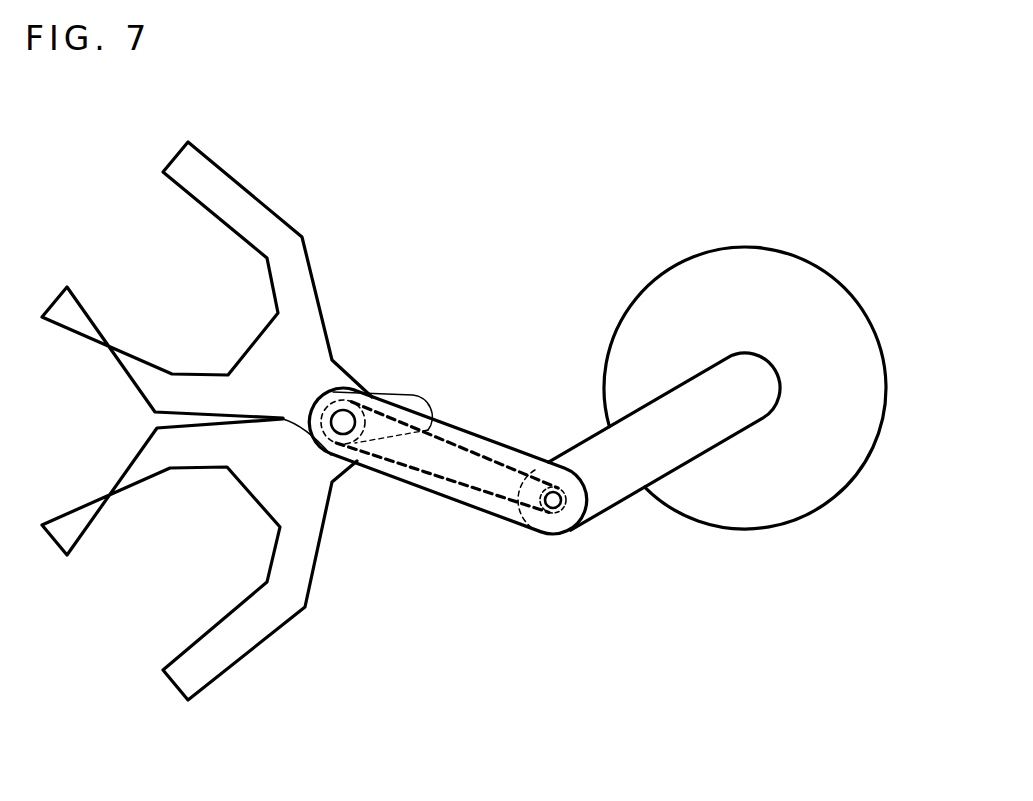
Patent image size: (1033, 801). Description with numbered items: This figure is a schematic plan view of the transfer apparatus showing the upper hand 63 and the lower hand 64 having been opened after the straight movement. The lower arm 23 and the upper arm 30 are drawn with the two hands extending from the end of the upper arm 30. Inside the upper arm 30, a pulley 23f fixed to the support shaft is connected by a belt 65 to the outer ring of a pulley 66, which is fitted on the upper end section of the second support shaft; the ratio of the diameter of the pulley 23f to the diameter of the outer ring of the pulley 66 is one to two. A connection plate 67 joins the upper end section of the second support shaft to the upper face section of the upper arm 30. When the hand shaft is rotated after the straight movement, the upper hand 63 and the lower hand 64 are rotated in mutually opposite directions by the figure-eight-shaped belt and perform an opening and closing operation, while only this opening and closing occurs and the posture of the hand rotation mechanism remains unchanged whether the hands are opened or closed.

The upper hand 63 is at (223, 178).
The lower hand 64 is at (238, 648).
The pulley 66 is at (340, 390).
The connection plate 67 is at (363, 466).
The belt 65 is at (442, 477).
The upper arm 30 is at (468, 437).
The pulley 23f is at (558, 520).
The lower arm 23 is at (615, 493).